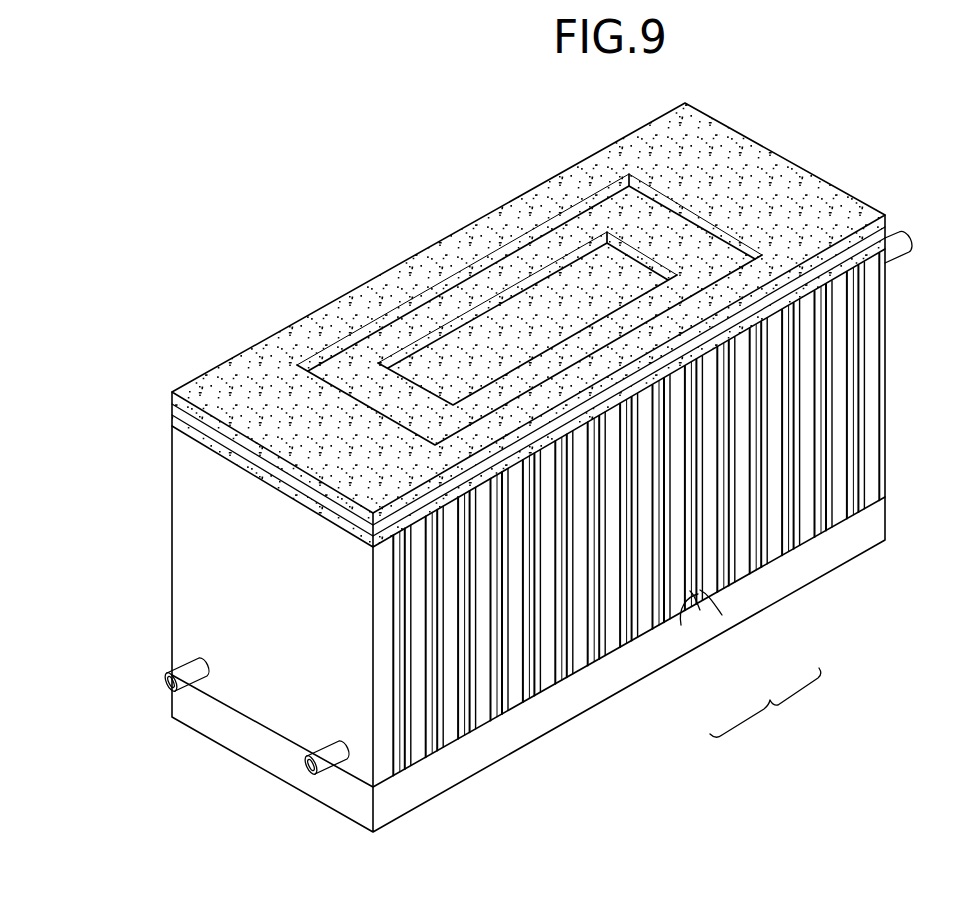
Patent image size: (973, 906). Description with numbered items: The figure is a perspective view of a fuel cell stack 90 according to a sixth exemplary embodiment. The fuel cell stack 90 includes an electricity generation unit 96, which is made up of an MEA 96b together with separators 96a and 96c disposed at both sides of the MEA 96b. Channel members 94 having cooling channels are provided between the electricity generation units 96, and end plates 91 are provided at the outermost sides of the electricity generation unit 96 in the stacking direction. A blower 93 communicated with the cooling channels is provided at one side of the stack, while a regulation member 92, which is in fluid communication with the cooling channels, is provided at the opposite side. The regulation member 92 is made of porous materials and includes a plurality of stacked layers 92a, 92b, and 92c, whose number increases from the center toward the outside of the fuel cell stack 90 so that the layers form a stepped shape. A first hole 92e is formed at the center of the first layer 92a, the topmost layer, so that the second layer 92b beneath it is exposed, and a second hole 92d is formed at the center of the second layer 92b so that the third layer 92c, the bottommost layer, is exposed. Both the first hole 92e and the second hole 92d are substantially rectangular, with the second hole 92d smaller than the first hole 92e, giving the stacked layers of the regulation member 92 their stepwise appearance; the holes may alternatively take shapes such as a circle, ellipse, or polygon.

The fuel cell stack 90 is at (331, 182).
The end plate 91 is at (258, 698).
The regulation member 92 is at (207, 356).
The first layer 92a is at (722, 150).
The second layer 92b is at (677, 240).
The third layer 92c is at (577, 293).
The second hole 92d is at (442, 330).
The first hole 92e is at (483, 262).
The blower 93 is at (505, 738).
The channel member 94 is at (548, 662).
The electricity generation unit 96 is at (765, 705).
The separator 96a is at (681, 625).
The MEA 96b is at (700, 610).
The separator 96c is at (722, 615).